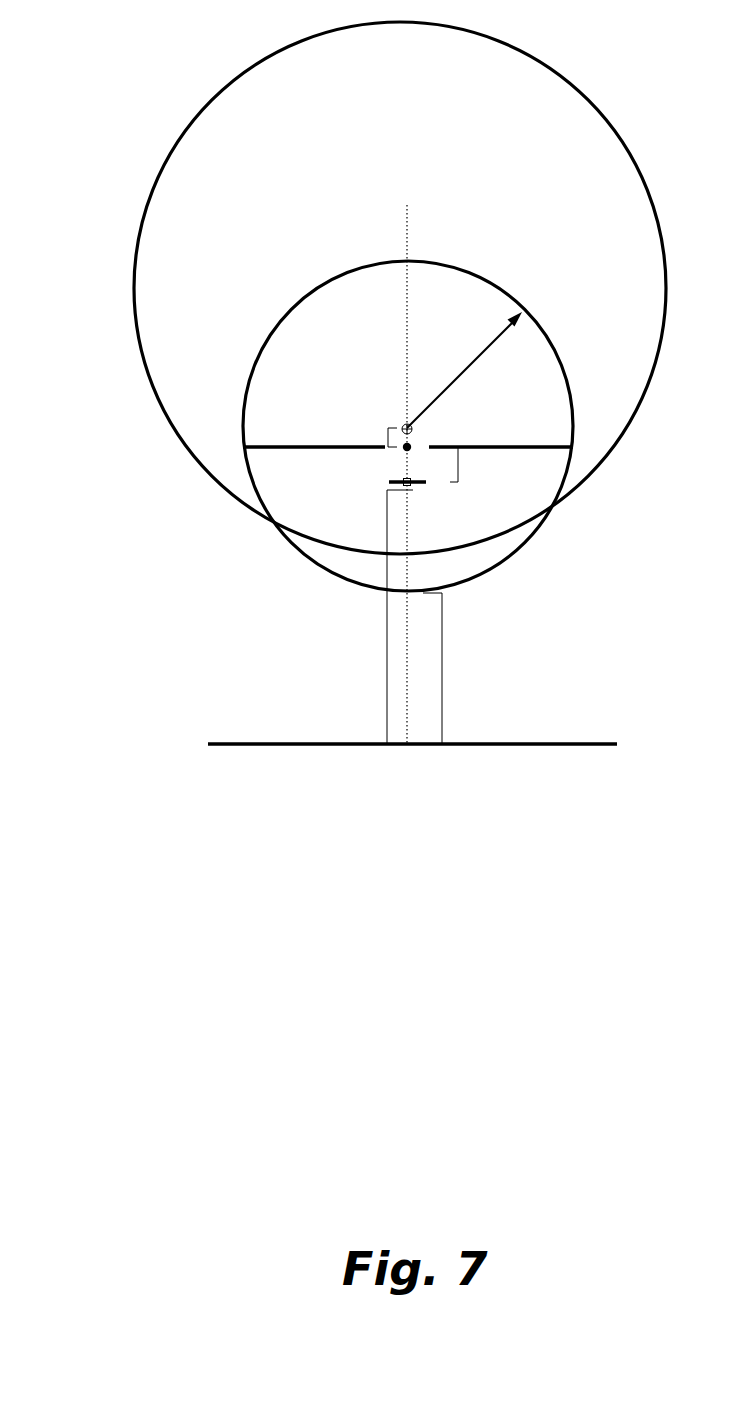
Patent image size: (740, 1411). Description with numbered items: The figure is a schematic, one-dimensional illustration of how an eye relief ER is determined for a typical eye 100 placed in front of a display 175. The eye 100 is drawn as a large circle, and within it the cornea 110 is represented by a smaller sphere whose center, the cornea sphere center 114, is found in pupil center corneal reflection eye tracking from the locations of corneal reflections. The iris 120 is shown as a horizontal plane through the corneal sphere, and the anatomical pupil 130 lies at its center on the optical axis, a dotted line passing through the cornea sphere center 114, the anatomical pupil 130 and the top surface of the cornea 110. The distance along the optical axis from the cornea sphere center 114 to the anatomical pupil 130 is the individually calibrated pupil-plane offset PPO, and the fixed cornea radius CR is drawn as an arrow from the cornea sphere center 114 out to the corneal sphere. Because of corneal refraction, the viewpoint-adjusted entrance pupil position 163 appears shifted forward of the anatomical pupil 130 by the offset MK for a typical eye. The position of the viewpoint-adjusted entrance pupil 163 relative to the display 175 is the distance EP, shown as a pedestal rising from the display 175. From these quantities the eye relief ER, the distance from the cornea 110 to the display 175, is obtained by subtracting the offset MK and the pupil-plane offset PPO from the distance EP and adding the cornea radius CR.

The eye 100 is at (152, 184).
The cornea 110 is at (362, 265).
The cornea sphere center 114 is at (401, 423).
The iris 120 is at (280, 450).
The anatomical pupil 130 is at (409, 446).
The viewpoint-adjusted entrance pupil position 163 is at (415, 488).
The display 175 is at (275, 750).
The cornea radius CR is at (464, 370).
The pupil-plane offset PPO is at (388, 434).
The entrance pupil to anatomical pupil offset MK is at (458, 465).
The entrance pupil position distance EP is at (387, 617).
The eye relief ER is at (442, 669).